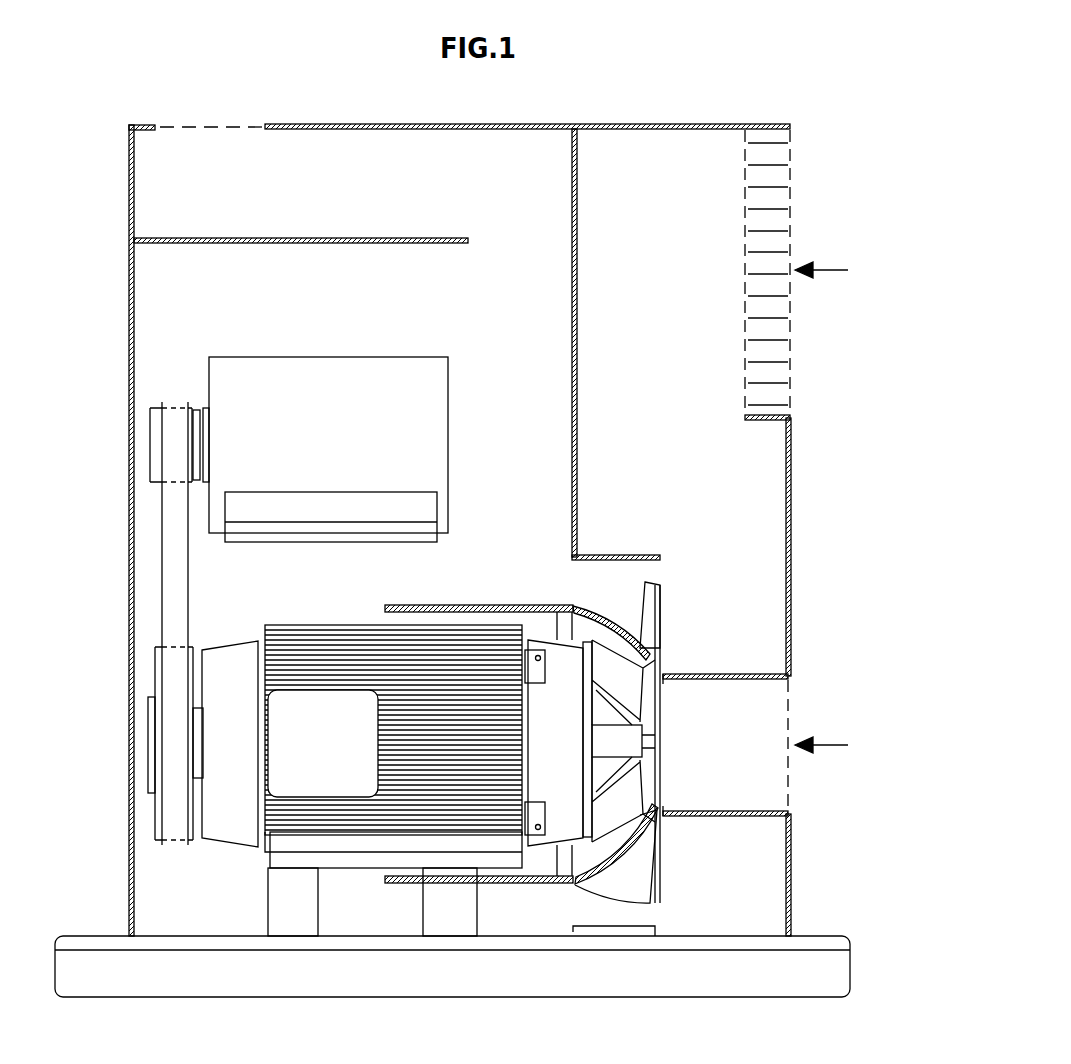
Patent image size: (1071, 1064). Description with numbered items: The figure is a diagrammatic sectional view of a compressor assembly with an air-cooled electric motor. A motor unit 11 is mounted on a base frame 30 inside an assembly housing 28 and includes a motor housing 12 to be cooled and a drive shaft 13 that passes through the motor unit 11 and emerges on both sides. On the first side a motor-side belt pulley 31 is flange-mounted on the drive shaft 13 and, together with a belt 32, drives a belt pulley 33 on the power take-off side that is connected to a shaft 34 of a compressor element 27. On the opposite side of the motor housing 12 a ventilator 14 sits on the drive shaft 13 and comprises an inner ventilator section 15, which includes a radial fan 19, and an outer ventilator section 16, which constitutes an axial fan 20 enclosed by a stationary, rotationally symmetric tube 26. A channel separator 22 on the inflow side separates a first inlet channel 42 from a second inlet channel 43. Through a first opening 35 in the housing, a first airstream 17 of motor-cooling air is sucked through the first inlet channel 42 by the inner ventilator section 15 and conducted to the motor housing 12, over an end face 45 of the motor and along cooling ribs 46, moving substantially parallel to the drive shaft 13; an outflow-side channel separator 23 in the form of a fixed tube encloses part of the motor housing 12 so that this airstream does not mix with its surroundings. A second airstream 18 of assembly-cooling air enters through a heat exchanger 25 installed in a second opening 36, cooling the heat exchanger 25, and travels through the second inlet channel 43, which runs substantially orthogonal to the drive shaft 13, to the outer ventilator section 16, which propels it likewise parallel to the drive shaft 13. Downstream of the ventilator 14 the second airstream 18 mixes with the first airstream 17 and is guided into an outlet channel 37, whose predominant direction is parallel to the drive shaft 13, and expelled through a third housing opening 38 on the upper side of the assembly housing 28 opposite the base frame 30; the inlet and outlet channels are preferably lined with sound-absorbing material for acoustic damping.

The motor unit 11 is at (392, 742).
The motor housing 12 is at (270, 627).
The drive shaft 13 is at (195, 765).
The ventilator 14 is at (646, 731).
The inner ventilator section 15 is at (586, 625).
The outer ventilator section 16 is at (632, 615).
The first airstream 17 is at (828, 752).
The second airstream 18 is at (828, 275).
The radial fan 19 is at (645, 672).
The axial fan 20 is at (650, 600).
The channel separator 22 is at (735, 818).
The channel separator 23 is at (458, 605).
The heat exchanger 25 is at (760, 236).
The tube 26 is at (650, 926).
The compressor element 27 is at (412, 409).
The assembly housing 28 is at (131, 500).
The base frame 30 is at (455, 968).
The motor-side belt pulley 31 is at (152, 815).
The belt 32 is at (190, 550).
The belt pulley 33 is at (150, 425).
The shaft 34 is at (200, 428).
The first opening 35 is at (798, 690).
The second opening 36 is at (800, 210).
The outlet channel 37 is at (428, 213).
The third housing opening 38 is at (228, 122).
The first inlet channel 42 is at (736, 760).
The second inlet channel 43 is at (675, 409).
The end face 45 is at (592, 884).
The cooling ribs 46 is at (362, 820).